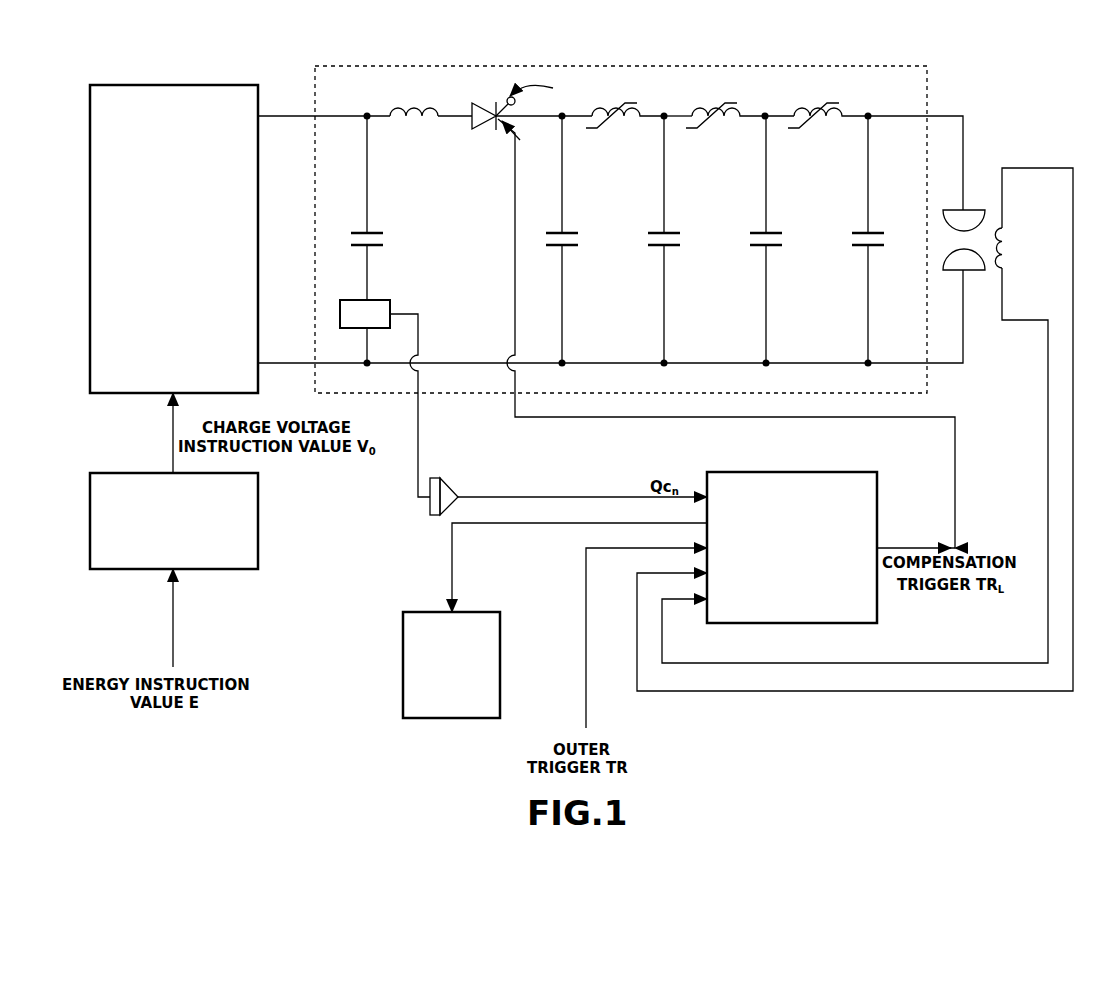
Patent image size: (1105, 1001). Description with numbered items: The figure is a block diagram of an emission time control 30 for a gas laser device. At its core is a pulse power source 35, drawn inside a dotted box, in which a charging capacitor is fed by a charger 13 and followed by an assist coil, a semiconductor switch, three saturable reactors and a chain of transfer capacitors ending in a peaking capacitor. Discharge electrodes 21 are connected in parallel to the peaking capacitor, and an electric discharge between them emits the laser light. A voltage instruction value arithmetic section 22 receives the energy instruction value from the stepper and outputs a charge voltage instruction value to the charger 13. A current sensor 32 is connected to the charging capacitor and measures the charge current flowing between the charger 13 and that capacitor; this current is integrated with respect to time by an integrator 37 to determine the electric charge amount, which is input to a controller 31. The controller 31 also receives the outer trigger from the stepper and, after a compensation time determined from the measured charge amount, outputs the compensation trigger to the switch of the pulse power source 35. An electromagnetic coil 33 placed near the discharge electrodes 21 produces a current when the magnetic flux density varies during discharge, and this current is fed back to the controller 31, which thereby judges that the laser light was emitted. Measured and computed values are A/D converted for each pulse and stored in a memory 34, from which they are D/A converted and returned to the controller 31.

The charger 13 is at (173, 85).
The discharge electrodes 21 is at (968, 208).
The voltage instruction value arithmetic section 22 is at (258, 521).
The emission time control 30 is at (842, 704).
The controller 31 is at (822, 472).
The current sensor 32 is at (390, 300).
The electromagnetic coil 33 is at (1007, 247).
The memory 34 is at (403, 655).
The pulse power source 35 is at (610, 280).
The integrator 37 is at (430, 508).